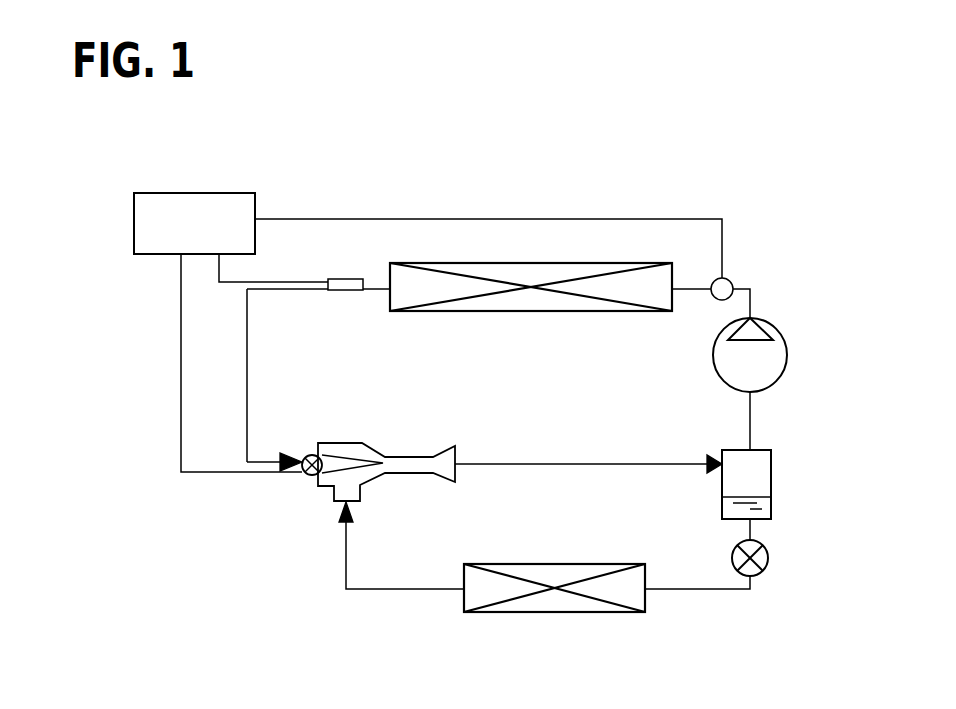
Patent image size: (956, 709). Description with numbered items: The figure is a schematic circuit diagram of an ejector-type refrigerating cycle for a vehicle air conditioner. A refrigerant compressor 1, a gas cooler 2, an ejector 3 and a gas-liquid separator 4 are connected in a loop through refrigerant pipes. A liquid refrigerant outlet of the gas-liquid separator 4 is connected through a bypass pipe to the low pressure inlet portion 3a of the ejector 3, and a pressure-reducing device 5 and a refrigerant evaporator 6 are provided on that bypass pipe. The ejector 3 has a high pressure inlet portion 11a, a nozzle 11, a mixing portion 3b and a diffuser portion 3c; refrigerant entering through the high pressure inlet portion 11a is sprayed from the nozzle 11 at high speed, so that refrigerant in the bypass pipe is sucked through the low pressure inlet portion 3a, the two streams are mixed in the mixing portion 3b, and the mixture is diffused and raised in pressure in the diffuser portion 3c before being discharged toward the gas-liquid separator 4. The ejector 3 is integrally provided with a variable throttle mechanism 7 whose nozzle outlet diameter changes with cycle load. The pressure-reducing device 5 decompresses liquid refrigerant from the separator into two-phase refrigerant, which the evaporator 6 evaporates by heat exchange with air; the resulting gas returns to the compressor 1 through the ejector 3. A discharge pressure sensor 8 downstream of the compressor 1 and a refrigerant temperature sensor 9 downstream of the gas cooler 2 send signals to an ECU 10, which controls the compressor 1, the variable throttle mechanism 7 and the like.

The refrigerant compressor 1 is at (787, 353).
The gas cooler 2 is at (594, 263).
The ejector 3 is at (343, 411).
The low pressure inlet portion 3a is at (333, 502).
The mixing portion 3b is at (405, 467).
The diffuser portion 3c is at (443, 468).
The gas-liquid separator 4 is at (772, 474).
The pressure-reducing device 5 is at (769, 558).
The refrigerant evaporator 6 is at (583, 612).
The variable throttle mechanism 7 is at (293, 480).
The discharge pressure sensor 8 is at (731, 283).
The refrigerant temperature sensor 9 is at (347, 279).
The ECU 10 is at (207, 193).
The nozzle 11 is at (352, 458).
The high pressure inlet portion 11a is at (305, 456).